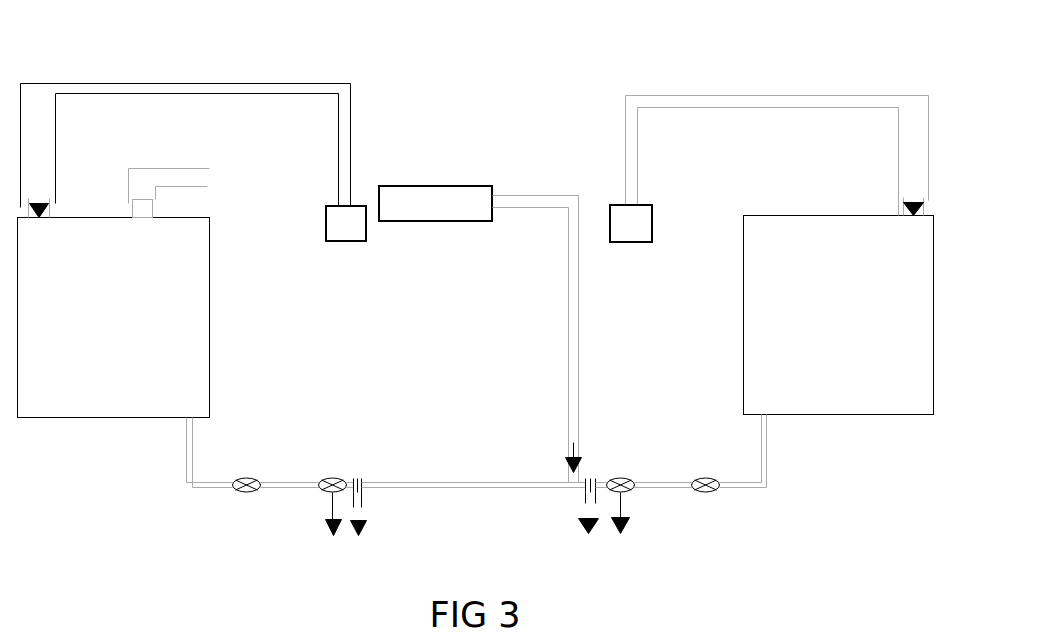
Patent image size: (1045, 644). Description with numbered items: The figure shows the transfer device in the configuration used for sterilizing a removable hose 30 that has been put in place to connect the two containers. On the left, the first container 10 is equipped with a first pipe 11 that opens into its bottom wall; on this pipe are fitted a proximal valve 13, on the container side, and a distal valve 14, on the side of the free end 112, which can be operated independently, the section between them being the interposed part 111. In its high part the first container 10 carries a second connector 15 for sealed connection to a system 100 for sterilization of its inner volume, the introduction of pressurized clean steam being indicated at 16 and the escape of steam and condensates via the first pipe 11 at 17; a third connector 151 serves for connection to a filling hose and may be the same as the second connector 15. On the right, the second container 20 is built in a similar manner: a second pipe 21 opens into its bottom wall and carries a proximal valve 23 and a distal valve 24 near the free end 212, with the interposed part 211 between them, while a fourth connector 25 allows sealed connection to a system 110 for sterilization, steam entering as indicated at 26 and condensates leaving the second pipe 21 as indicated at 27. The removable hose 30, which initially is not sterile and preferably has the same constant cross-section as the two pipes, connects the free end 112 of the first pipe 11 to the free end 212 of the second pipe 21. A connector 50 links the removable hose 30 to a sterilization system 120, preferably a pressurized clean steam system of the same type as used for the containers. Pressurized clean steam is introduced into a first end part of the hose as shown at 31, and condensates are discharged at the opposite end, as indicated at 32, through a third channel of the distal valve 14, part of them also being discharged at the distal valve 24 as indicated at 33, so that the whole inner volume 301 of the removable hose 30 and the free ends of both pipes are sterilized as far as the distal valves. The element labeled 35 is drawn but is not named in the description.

The first container 10 is at (210, 287).
The first pipe 11 is at (185, 452).
The proximal valve 13 is at (243, 495).
The distal valve 14 is at (332, 477).
The second connector 15 is at (50, 212).
The third connector 151 is at (153, 207).
The introduction of pressurized clean steam into the first container 16 is at (40, 197).
The discharge of condensates from the first pipe 17 is at (360, 515).
The second container 20 is at (743, 304).
The second pipe 21 is at (767, 445).
The interposed part 211 is at (673, 489).
The free end 212 is at (598, 482).
The proximal valve 23 is at (705, 478).
The distal valve 24 is at (620, 473).
The fourth connector 25 is at (902, 207).
The introduction of pressurized clean steam into the second container 26 is at (912, 188).
The discharge of condensates from the second pipe 27 is at (585, 504).
The removable hose 30 is at (463, 452).
The inner volume 301 is at (468, 489).
The introduction of pressurized clean steam into the removable hose 31 is at (572, 447).
The discharge of condensates at the distal valve of the first pipe 32 is at (327, 508).
The discharge of condensates at the distal valve of the second pipe 33 is at (622, 503).
The return pipe 35 is at (171, 173).
The connector 50 is at (567, 478).
The system for sterilization 100 is at (337, 243).
The system for sterilization 110 is at (652, 232).
The interposed part 111 is at (283, 480).
The free end 112 is at (353, 480).
The sterilization system 120 is at (406, 222).